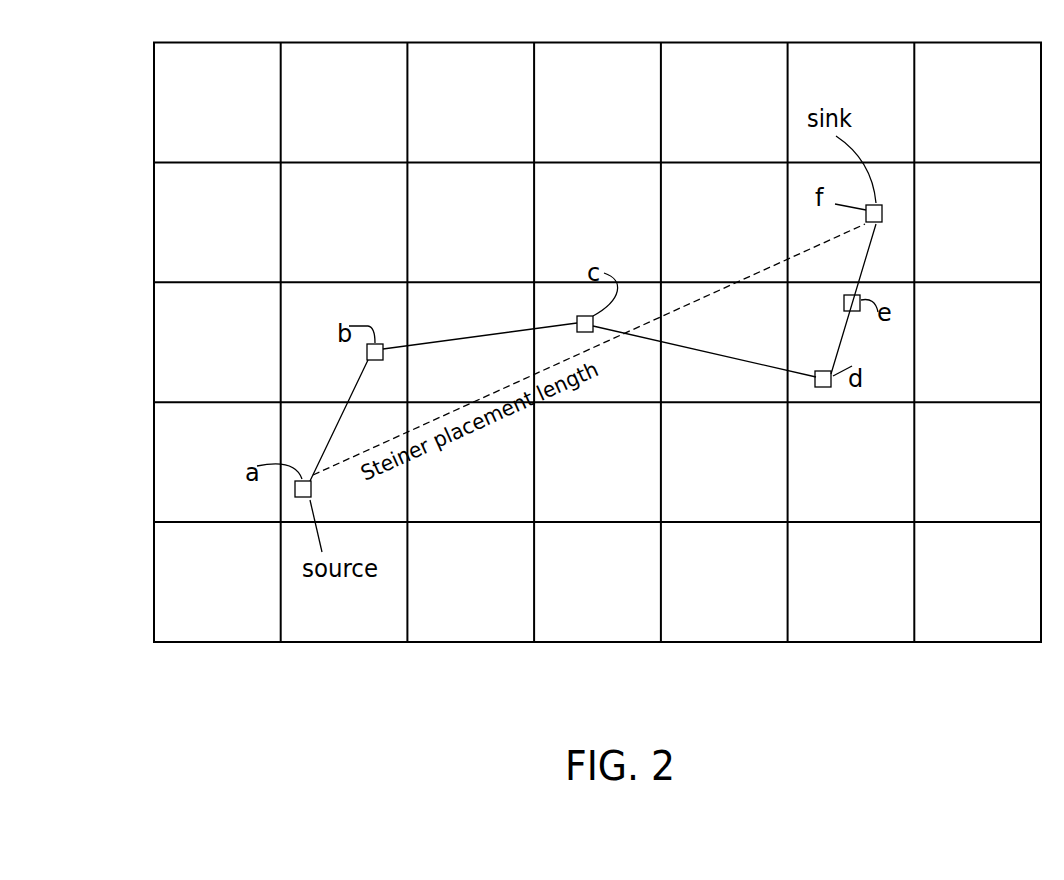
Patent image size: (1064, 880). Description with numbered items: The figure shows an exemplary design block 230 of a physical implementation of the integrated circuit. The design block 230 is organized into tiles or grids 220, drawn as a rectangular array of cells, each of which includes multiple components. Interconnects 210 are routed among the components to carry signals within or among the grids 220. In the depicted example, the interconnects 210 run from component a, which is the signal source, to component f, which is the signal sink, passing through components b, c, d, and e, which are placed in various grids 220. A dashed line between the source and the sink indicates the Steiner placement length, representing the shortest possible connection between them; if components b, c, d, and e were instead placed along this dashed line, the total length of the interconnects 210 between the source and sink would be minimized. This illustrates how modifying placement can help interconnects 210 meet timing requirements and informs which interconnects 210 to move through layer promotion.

The interconnects 210 is at (716, 329).
The tiles or grids 220 is at (150, 410).
The design block 230 is at (106, 96).